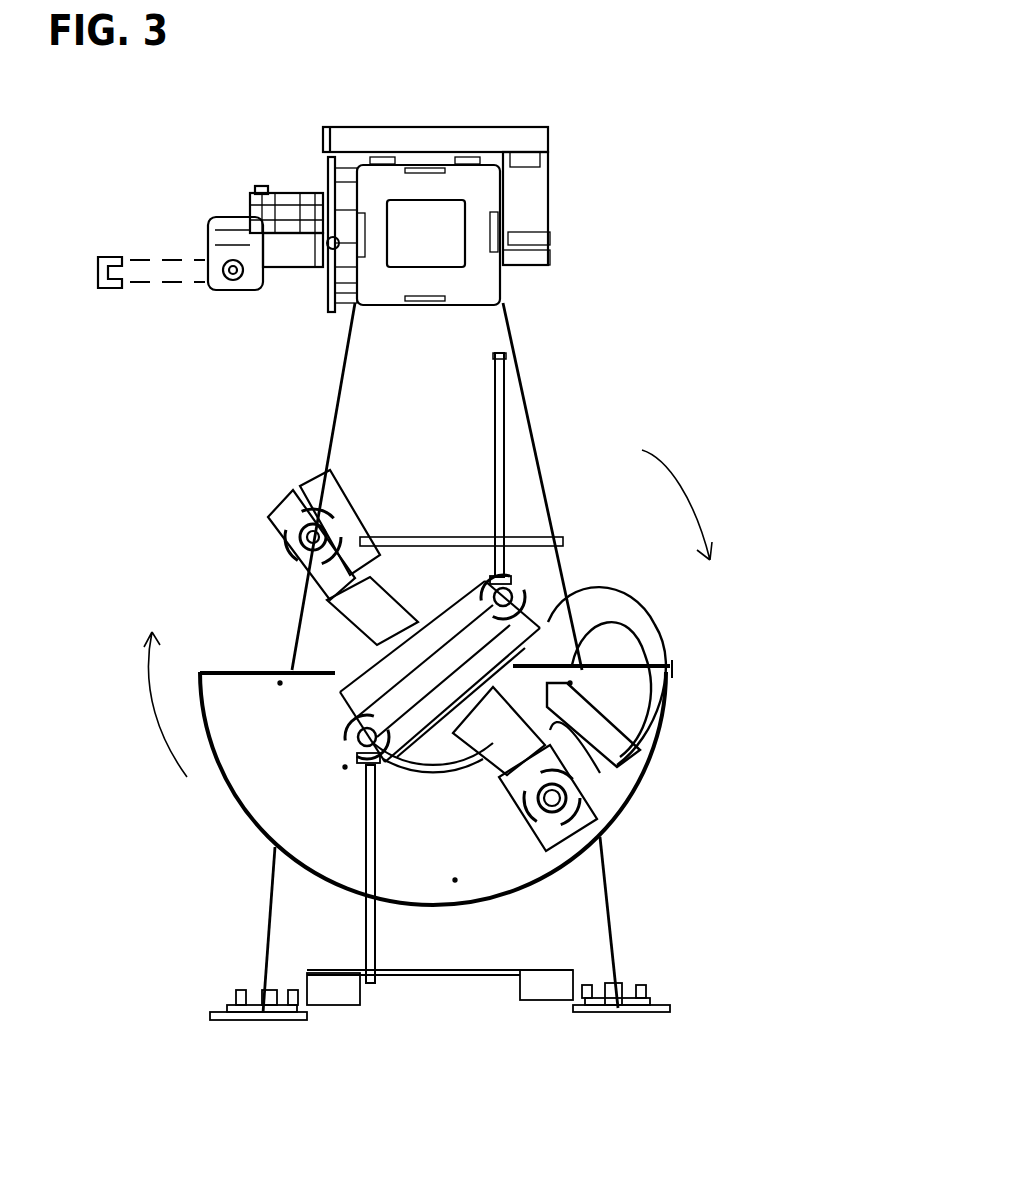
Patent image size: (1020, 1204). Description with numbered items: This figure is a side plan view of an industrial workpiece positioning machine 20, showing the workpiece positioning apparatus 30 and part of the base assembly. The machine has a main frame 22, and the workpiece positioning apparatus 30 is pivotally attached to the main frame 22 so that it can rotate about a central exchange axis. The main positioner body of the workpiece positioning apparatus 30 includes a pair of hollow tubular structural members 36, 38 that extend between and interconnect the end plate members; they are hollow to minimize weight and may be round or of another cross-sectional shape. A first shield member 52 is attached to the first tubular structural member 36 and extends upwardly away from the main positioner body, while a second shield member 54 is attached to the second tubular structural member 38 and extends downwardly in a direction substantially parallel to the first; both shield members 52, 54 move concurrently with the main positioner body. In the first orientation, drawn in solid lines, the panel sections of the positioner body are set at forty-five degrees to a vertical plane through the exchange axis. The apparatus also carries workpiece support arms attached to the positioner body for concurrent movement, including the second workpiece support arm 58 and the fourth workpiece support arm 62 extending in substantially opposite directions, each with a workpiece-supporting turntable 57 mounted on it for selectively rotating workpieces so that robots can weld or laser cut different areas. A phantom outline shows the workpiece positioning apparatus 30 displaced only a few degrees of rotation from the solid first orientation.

The industrial workpiece positioning machine 20 is at (650, 163).
The main frame 22 is at (316, 404).
The workpiece positioning apparatus 30 is at (332, 637).
The first tubular structural member 36 is at (489, 577).
The second tubular structural member 38 is at (345, 758).
The first shield member 52 is at (503, 397).
The second shield member 54 is at (365, 937).
The workpiece-supporting turntable 57 is at (603, 832).
The second workpiece support arm 58 is at (285, 545).
The fourth workpiece support arm 62 is at (605, 778).